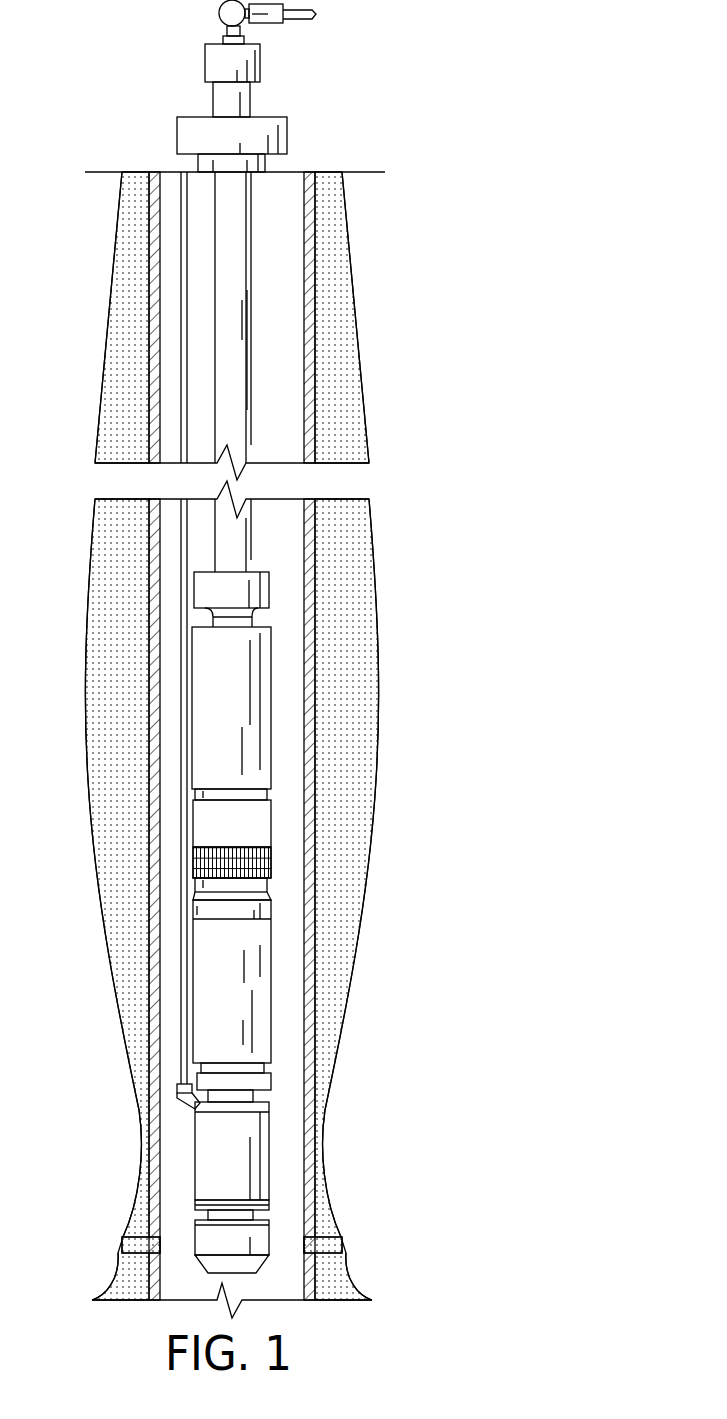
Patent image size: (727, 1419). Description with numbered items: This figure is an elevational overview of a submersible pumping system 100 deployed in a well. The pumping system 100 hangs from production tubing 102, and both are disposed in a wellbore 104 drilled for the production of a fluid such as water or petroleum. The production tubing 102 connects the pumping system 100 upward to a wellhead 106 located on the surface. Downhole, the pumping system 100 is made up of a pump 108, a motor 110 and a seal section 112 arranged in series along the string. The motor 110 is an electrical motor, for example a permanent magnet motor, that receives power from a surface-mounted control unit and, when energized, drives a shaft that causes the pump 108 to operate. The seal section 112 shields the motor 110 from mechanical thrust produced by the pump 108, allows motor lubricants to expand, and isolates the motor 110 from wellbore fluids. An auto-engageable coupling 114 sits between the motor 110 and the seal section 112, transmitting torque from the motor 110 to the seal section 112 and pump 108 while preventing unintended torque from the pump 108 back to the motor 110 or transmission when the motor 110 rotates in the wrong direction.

The pumping system 100 is at (425, 790).
The production tubing 102 is at (242, 220).
The wellbore 104 is at (307, 290).
The wellhead 106 is at (220, 63).
The pump 108 is at (266, 753).
The motor 110 is at (264, 1165).
The seal section 112 is at (284, 1005).
The auto-engageable coupling 114 is at (200, 1065).